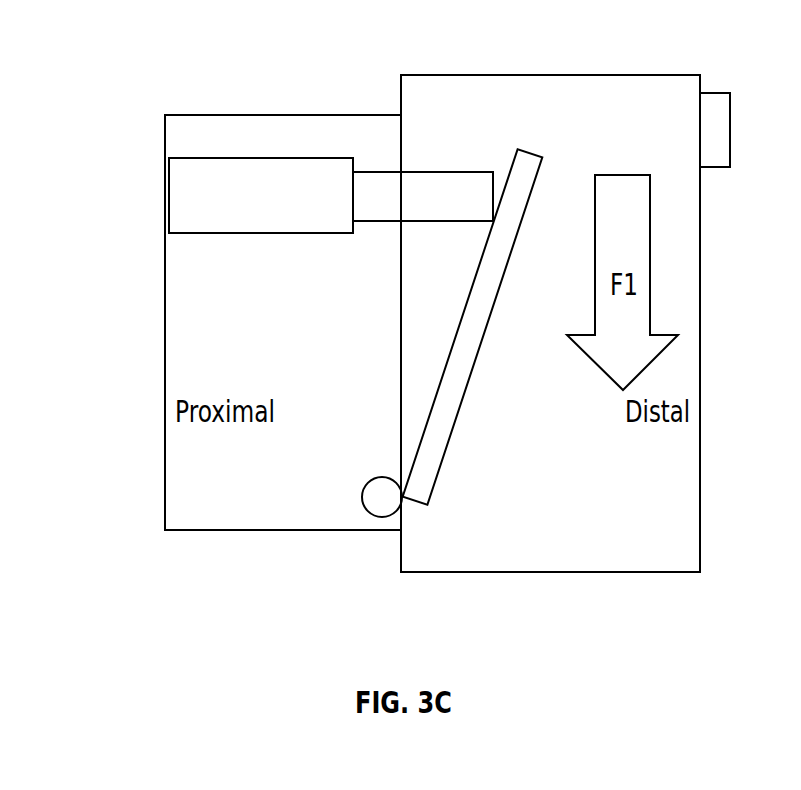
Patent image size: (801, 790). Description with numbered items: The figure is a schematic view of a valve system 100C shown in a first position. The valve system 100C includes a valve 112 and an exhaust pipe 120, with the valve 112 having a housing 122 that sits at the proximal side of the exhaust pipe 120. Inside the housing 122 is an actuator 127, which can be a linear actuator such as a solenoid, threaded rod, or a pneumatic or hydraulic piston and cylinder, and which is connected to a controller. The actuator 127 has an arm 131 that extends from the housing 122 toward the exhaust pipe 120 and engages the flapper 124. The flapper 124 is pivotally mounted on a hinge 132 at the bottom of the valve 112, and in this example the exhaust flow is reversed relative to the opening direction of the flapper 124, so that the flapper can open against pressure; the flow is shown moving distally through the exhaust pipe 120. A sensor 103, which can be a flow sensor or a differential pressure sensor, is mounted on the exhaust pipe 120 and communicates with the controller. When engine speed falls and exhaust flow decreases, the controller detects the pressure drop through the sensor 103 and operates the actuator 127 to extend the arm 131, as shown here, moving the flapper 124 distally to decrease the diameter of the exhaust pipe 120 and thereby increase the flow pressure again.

The valve system 100C is at (515, 580).
The sensor 103 is at (715, 168).
The valve 112 is at (397, 88).
The exhaust pipe 120 is at (654, 140).
The housing 122 is at (234, 114).
The flapper 124 is at (530, 152).
The actuator 127 is at (227, 178).
The arm 131 is at (446, 186).
The hinge 132 is at (368, 480).